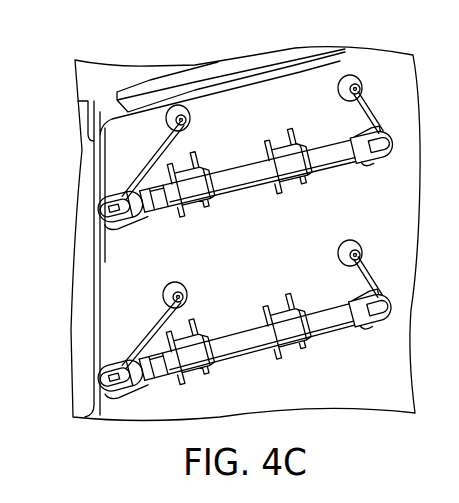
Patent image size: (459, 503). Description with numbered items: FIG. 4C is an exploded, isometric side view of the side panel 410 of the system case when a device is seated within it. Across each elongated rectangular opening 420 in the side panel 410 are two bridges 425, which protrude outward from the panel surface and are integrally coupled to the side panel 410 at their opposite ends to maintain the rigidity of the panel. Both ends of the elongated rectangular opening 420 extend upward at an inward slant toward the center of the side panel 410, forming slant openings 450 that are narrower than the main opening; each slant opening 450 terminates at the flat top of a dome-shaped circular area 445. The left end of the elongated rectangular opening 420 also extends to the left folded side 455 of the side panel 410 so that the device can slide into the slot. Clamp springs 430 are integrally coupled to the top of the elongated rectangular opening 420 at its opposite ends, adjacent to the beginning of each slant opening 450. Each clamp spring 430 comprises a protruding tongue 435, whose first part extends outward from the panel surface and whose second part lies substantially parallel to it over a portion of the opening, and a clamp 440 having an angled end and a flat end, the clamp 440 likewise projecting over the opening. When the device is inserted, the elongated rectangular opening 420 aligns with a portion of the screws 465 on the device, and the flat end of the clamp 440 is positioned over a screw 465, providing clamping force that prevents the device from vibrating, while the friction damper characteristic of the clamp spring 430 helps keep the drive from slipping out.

The side panel 410 is at (170, 86).
The elongated rectangular opening 420 is at (250, 166).
The bridge 425 is at (202, 207).
The clamp spring 430 is at (163, 184).
The protruding tongue 435 is at (144, 212).
The clamp 440 is at (165, 212).
The circular area 445 is at (190, 116).
The slant opening 450 is at (146, 172).
The left folded side 455 is at (98, 262).
The screw 465 is at (97, 210).